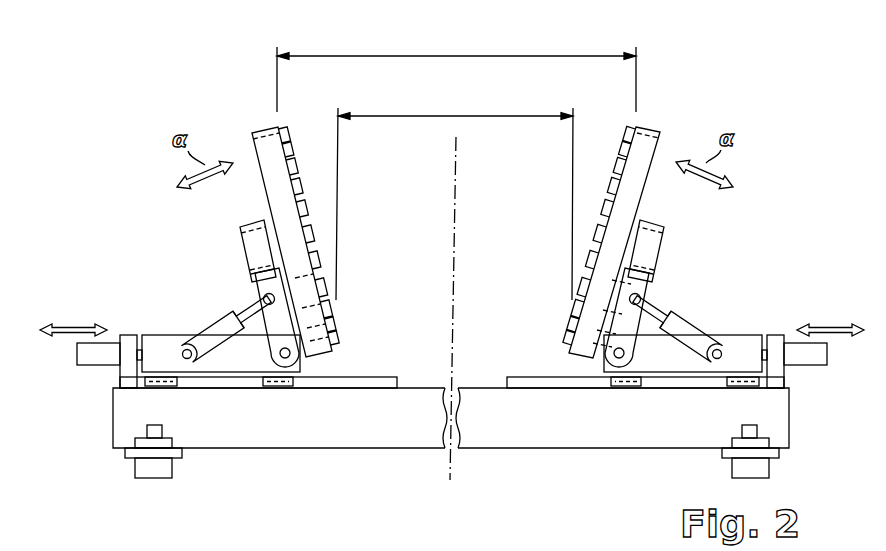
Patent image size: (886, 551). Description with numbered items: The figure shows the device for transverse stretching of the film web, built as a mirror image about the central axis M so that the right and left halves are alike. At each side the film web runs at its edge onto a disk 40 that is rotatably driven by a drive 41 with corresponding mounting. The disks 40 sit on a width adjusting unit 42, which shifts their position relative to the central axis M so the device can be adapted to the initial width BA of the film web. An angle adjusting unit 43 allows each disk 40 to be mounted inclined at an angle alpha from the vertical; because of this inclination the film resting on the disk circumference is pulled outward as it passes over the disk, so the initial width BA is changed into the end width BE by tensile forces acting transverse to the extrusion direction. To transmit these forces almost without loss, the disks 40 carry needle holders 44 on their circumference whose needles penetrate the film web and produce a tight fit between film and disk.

The disks 40 is at (643, 133).
The drive 41 is at (655, 248).
The width adjusting unit 42 is at (747, 333).
The angle adjusting unit 43 is at (681, 312).
The needle holders 44 is at (625, 135).
The central axis M is at (454, 245).
The end width BE is at (456, 68).
The initial width BA is at (454, 194).